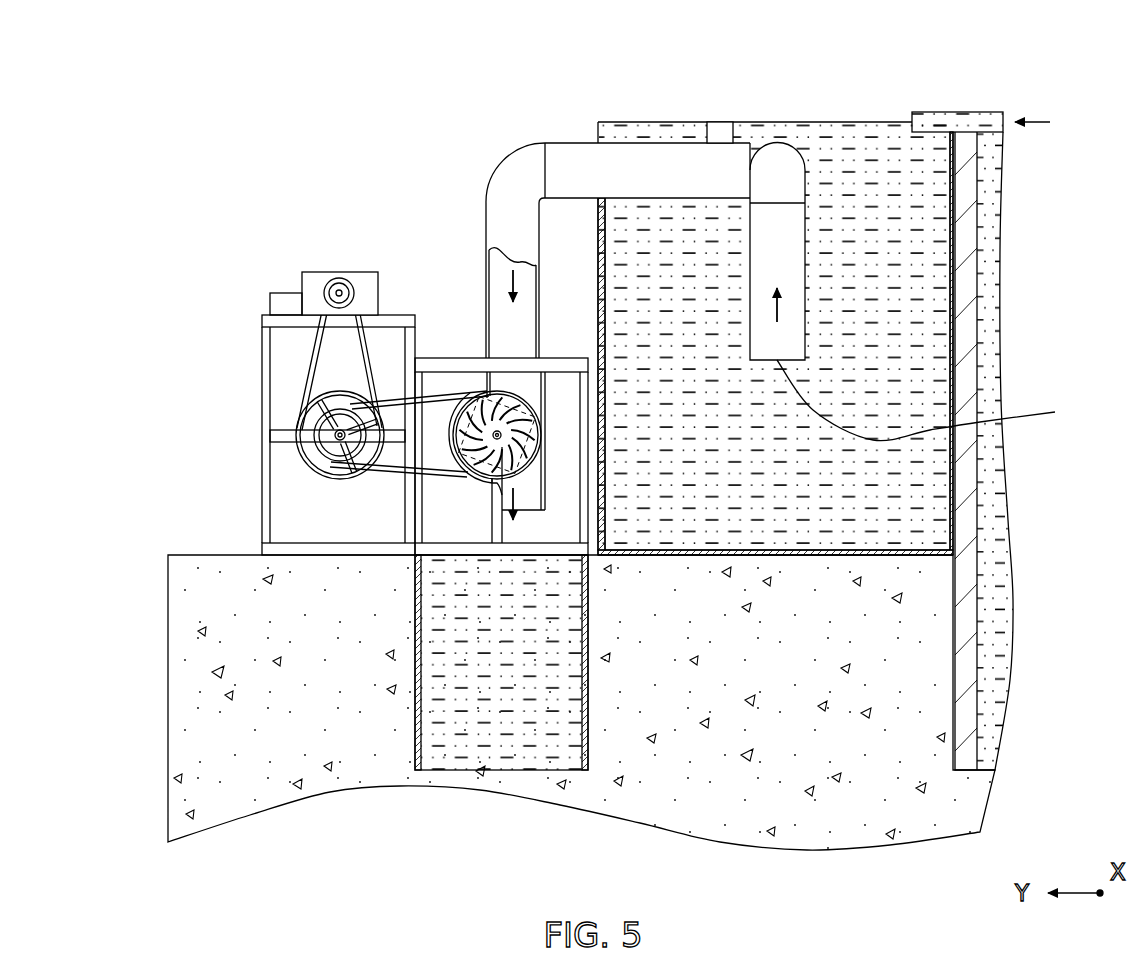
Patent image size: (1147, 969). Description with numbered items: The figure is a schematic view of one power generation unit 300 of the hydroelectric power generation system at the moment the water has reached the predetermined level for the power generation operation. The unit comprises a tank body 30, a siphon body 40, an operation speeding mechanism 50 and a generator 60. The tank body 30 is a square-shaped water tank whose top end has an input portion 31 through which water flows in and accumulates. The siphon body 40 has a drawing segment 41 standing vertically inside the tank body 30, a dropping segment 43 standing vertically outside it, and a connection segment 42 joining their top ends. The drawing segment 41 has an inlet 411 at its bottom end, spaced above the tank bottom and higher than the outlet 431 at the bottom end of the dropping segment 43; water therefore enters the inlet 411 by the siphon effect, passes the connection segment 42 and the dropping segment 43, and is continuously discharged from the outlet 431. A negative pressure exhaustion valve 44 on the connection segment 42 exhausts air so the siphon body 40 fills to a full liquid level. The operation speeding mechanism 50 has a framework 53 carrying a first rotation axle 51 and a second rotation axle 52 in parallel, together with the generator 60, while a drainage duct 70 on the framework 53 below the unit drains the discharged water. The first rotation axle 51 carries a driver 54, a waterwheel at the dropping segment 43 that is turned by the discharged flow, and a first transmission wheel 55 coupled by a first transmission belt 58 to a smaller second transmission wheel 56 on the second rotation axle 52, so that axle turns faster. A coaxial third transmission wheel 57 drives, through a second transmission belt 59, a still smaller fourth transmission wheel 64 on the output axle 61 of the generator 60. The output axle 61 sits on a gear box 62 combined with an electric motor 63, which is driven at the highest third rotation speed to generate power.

The power generation unit 300 is at (635, 456).
The tank body 30 is at (597, 132).
The input portion 31 is at (847, 115).
The siphon body 40 is at (572, 450).
The drawing segment 41 is at (787, 255).
The inlet 411 is at (939, 400).
The connection segment 42 is at (647, 121).
The dropping segment 43 is at (487, 499).
The outlet 431 is at (510, 490).
The negative pressure exhaustion valve 44 is at (718, 130).
The operation speeding mechanism 50 is at (334, 588).
The first rotation axle 51 is at (497, 437).
The second rotation axle 52 is at (340, 452).
The framework 53 is at (268, 485).
The driver 54 is at (537, 443).
The first transmission wheel 55 is at (493, 450).
The second transmission wheel 56 is at (335, 450).
The third transmission wheel 57 is at (348, 447).
The first transmission belt 58 is at (445, 397).
The second transmission belt 59 is at (305, 383).
The generator 60 is at (326, 257).
The output axle 61 is at (339, 293).
The gear box 62 is at (371, 292).
The electric motor 63 is at (278, 306).
The fourth transmission wheel 64 is at (345, 282).
The drainage duct 70 is at (513, 720).